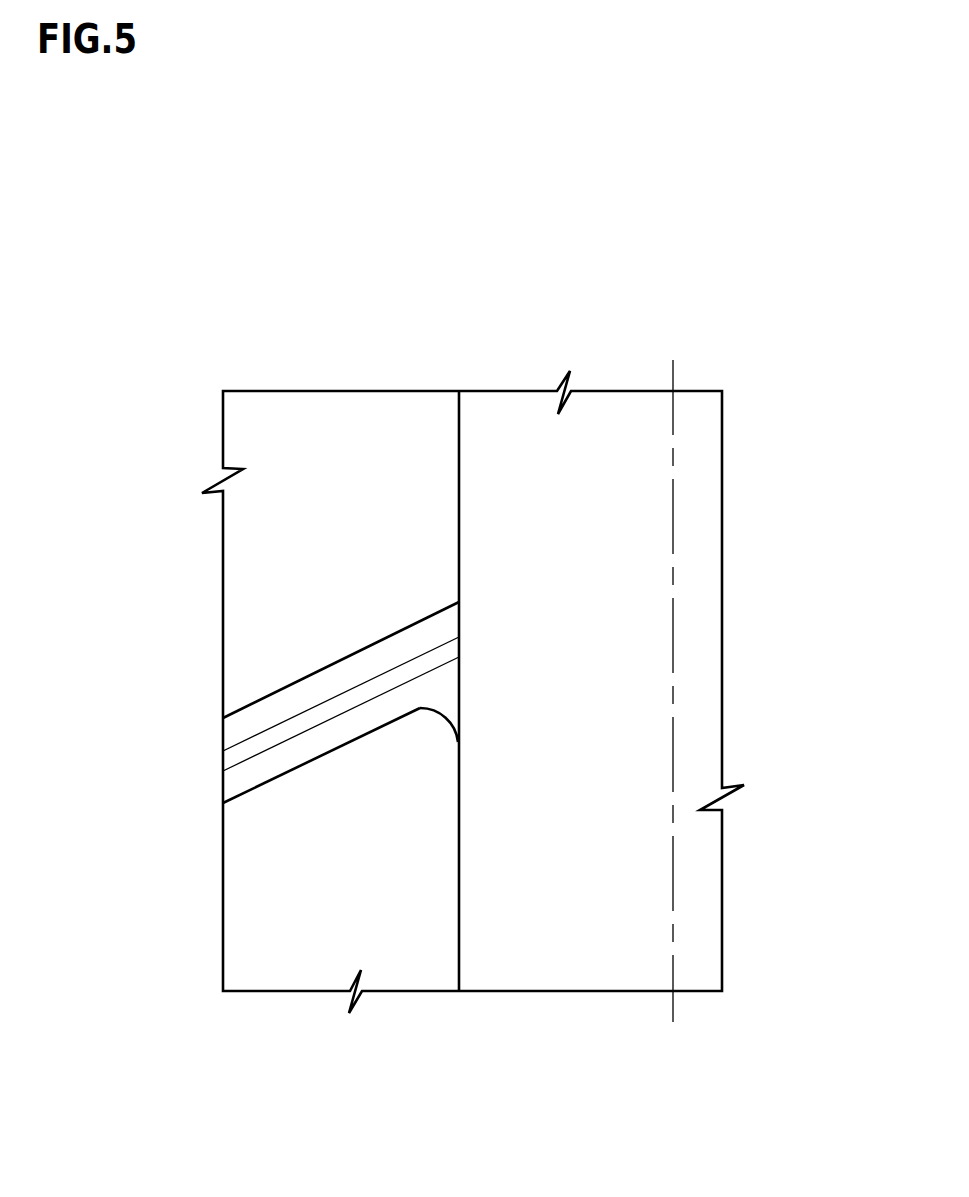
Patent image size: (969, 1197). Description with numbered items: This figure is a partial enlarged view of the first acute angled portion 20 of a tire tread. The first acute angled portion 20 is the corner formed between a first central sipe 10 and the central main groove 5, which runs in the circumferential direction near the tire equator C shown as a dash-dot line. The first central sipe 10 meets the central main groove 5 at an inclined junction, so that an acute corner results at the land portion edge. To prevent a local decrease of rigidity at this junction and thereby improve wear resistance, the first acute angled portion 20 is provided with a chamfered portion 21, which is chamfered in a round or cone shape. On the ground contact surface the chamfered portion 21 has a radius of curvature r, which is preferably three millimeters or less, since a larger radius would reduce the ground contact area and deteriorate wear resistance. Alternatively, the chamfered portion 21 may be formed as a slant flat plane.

The central main groove 5 is at (555, 940).
The first central sipe 10 is at (306, 697).
The first acute angled portion 20 is at (470, 690).
The chamfered portion 21 is at (455, 716).
The radius of curvature r is at (443, 715).
The tire equator C is at (673, 677).